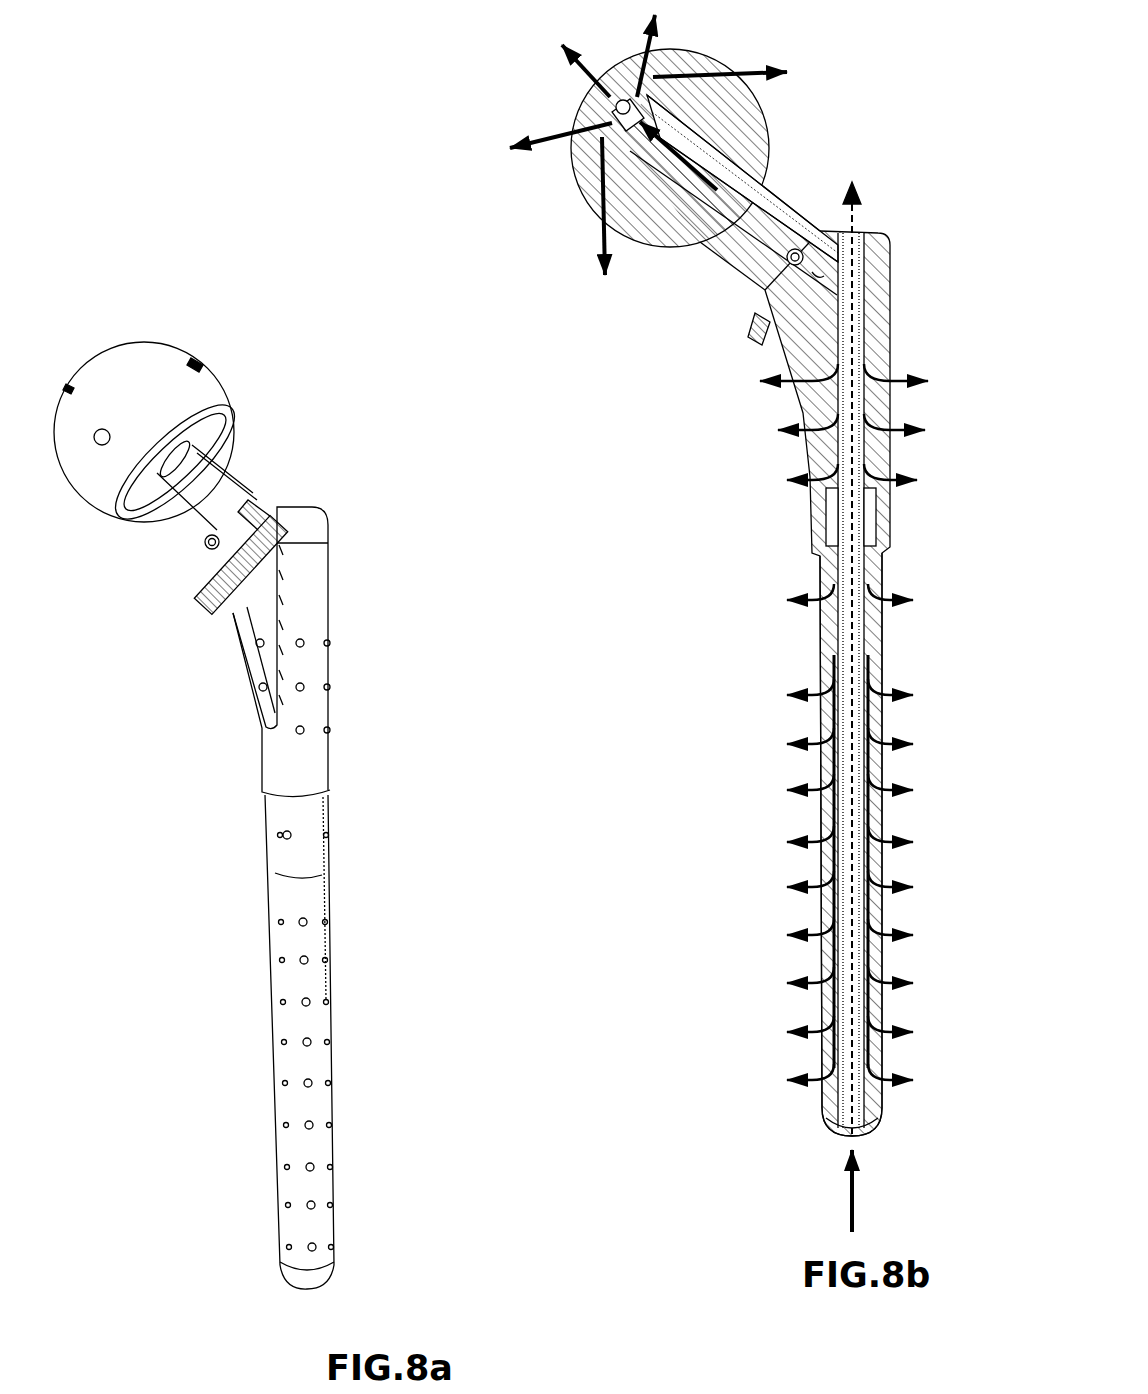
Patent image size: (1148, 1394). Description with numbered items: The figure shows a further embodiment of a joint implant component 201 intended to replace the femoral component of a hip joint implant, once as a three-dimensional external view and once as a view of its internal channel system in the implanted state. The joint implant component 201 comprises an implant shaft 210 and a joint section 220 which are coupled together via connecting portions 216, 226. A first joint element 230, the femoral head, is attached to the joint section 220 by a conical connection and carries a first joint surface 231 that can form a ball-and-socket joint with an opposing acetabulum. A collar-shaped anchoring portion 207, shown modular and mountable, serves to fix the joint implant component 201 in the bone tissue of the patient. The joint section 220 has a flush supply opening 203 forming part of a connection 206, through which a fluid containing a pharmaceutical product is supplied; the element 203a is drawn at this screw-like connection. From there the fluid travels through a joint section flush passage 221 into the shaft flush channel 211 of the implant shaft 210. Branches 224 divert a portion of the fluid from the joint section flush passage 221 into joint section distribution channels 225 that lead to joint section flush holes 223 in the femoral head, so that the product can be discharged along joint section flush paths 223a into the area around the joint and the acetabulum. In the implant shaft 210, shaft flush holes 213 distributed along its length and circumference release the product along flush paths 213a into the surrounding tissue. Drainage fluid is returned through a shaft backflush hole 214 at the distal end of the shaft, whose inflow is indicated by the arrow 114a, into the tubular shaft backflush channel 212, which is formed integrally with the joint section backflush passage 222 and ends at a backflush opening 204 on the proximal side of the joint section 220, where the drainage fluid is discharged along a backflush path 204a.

In FIG. 8A, the joint implant component 201 is at (203, 293).
In FIG. 8B, the joint implant component 201 is at (760, 43).
In FIG. 8A, the flush supply opening 203 is at (213, 548).
In FIG. 8B, the flush supply opening 203 is at (818, 268).
In FIG. 8B, the screw head 203a is at (795, 250).
In FIG. 8B, the backflush opening 204 is at (855, 228).
In FIG. 8B, the backflush path 204a is at (853, 222).
In FIG. 8A, the connection 206 is at (222, 530).
In FIG. 8A, the anchoring portion 207 is at (215, 608).
In FIG. 8B, the anchoring portion 207 is at (755, 335).
In FIG. 8A, the implant shaft 210 is at (290, 1042).
In FIG. 8B, the shaft flush channel 211 is at (866, 618).
In FIG. 8B, the shaft backflush channel 212 is at (862, 802).
In FIG. 8A, the shaft flush holes 213 is at (307, 960).
In FIG. 8B, the flush paths 213a is at (800, 1031).
In FIG. 8B, the shaft backflush hole 214 is at (848, 1135).
In FIG. 8B, the inflow arrow 114a is at (849, 1182).
In FIG. 8B, the connecting portion 216 is at (826, 522).
In FIG. 8B, the connecting portion 226 is at (870, 517).
In FIG. 8A, the joint section 220 is at (377, 637).
In FIG. 8B, the joint section 220 is at (703, 310).
In FIG. 8B, the joint section flush passage 221 is at (818, 277).
In FIG. 8B, the joint section backflush passage 222 is at (860, 295).
In FIG. 8A, the joint section flush holes 223 is at (193, 360).
In FIG. 8B, the joint section flush holes 223 is at (886, 478).
In FIG. 8B, the joint section flush paths 223a is at (602, 242).
In FIG. 8B, the branches 224 is at (650, 78).
In FIG. 8B, the joint section distribution channels 225 is at (618, 100).
In FIG. 8A, the first joint element 230 is at (67, 475).
In FIG. 8A, the first joint surface 231 is at (125, 362).